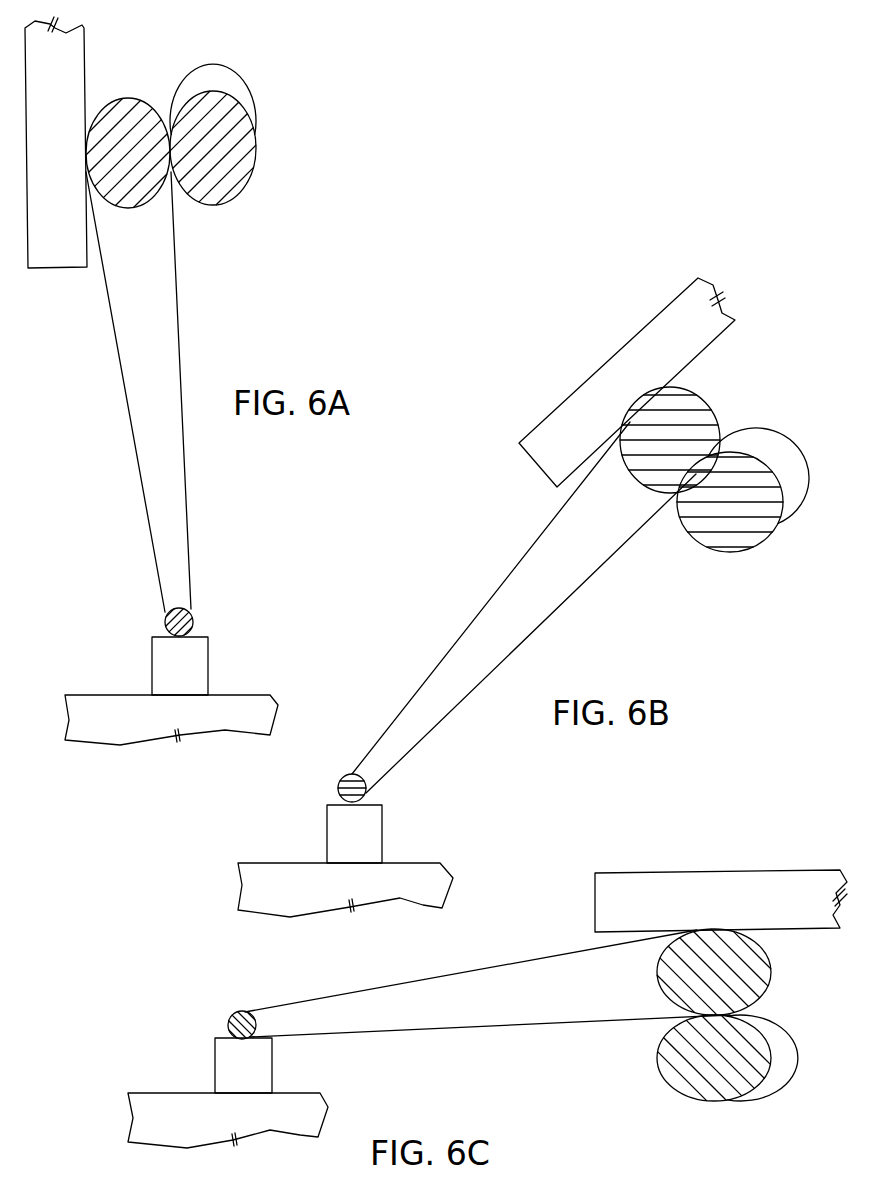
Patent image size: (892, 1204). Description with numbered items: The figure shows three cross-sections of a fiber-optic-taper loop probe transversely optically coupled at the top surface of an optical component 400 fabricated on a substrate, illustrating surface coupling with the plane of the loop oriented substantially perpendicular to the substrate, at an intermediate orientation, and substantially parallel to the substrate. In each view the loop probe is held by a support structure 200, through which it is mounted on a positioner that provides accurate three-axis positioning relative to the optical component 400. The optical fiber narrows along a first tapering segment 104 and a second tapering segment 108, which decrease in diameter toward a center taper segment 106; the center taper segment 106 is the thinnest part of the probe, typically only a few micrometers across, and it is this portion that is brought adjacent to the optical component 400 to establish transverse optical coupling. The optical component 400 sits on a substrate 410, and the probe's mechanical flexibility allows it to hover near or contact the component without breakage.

In FIG. 6A, the first tapering segment 104 is at (118, 155).
In FIG. 6B, the first tapering segment 104 is at (663, 435).
In FIG. 6C, the first tapering segment 104 is at (710, 965).
In FIG. 6A, the second tapering segment 108 is at (237, 167).
In FIG. 6B, the second tapering segment 108 is at (730, 533).
In FIG. 6C, the second tapering segment 108 is at (697, 1078).
In FIG. 6A, the center taper segment 106 is at (167, 618).
In FIG. 6B, the center taper segment 106 is at (352, 775).
In FIG. 6C, the center taper segment 106 is at (238, 1012).
In FIG. 6A, the support structure 200 is at (73, 135).
In FIG. 6B, the support structure 200 is at (663, 384).
In FIG. 6C, the support structure 200 is at (745, 915).
In FIG. 6A, the optical component 400 is at (200, 682).
In FIG. 6B, the optical component 400 is at (373, 852).
In FIG. 6C, the optical component 400 is at (266, 1082).
In FIG. 6A, the base 410 is at (132, 735).
In FIG. 6B, the base 410 is at (317, 907).
In FIG. 6C, the base 410 is at (200, 1139).